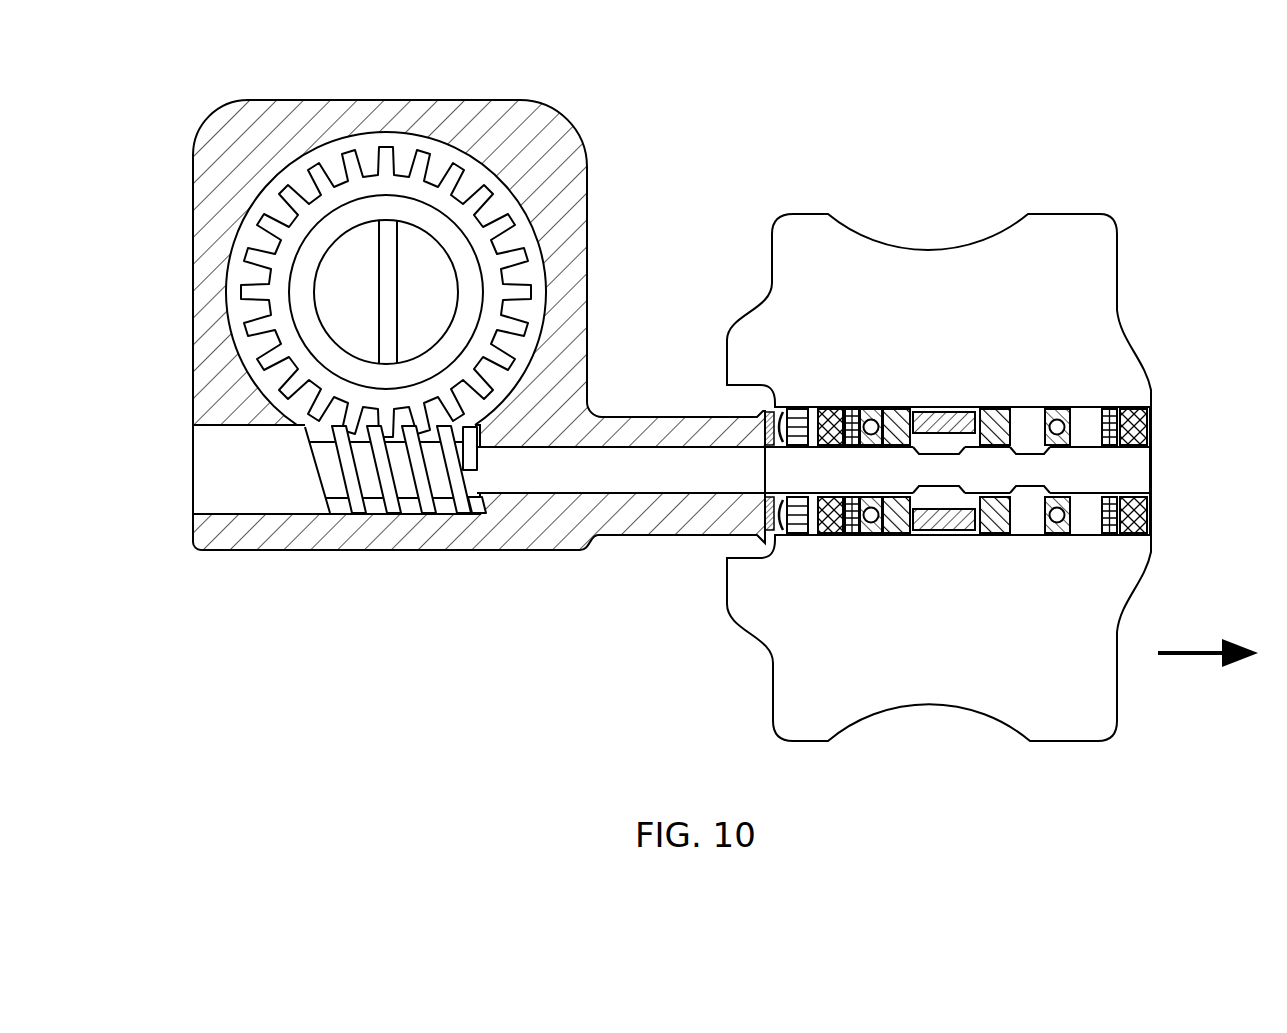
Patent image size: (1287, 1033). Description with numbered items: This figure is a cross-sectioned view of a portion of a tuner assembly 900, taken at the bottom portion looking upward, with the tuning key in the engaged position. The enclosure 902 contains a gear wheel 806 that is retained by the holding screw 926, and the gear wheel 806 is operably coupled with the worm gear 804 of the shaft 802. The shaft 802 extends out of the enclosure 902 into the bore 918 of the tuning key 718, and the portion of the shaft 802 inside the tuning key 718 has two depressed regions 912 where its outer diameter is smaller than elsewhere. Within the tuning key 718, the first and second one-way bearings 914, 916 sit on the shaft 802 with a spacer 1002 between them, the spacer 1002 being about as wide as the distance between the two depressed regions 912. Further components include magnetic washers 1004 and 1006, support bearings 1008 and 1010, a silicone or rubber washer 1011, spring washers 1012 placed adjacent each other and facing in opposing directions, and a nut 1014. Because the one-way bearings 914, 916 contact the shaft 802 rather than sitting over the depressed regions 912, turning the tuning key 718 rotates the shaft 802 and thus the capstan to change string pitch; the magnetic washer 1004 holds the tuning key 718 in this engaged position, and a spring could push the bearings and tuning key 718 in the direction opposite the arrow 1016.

The tuner assembly 900 is at (671, 338).
The enclosure 902 is at (560, 343).
The gear wheel 806 is at (425, 168).
The holding screw 926 is at (418, 270).
The worm gear 804 is at (355, 498).
The shaft 802 is at (600, 470).
The depressed regions 912 is at (981, 509).
The tuning key 718 is at (765, 642).
The bore 918 is at (1153, 525).
The nut 1014 is at (790, 405).
The spring washers 1012 is at (781, 543).
The magnetic washer 1004 is at (830, 405).
The silicone or rubber washer 1011 is at (1098, 628).
The support bearing 1008 is at (872, 537).
The second one-way bearing 916 is at (898, 405).
The spacer 1002 is at (957, 405).
The first one-way bearing 914 is at (1000, 405).
The support bearing 1010 is at (1060, 537).
The magnetic washer 1006 is at (1127, 405).
The arrow 1016 is at (1212, 647).